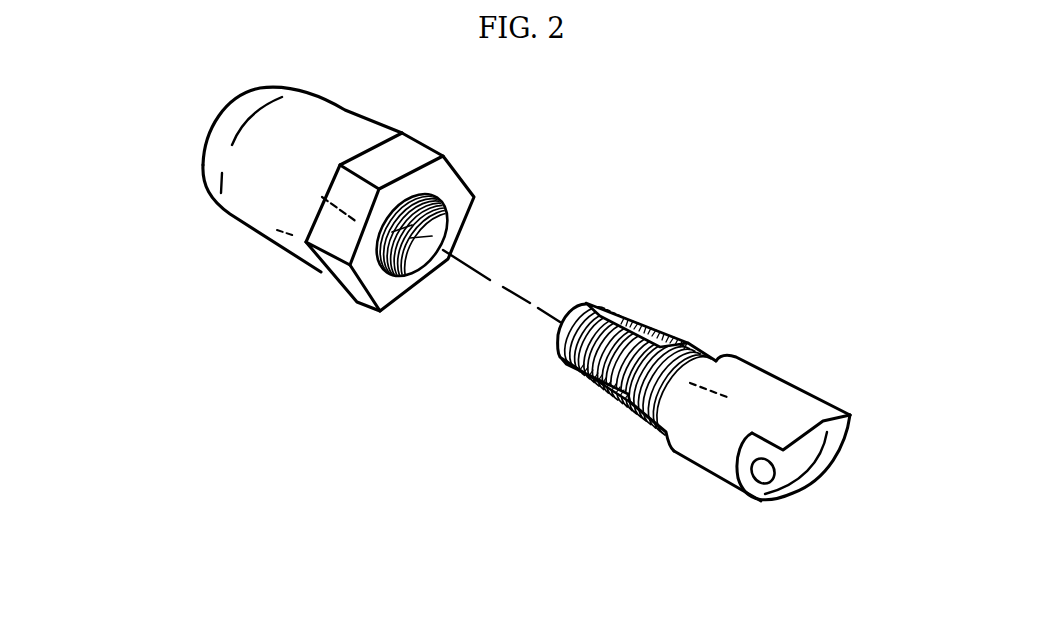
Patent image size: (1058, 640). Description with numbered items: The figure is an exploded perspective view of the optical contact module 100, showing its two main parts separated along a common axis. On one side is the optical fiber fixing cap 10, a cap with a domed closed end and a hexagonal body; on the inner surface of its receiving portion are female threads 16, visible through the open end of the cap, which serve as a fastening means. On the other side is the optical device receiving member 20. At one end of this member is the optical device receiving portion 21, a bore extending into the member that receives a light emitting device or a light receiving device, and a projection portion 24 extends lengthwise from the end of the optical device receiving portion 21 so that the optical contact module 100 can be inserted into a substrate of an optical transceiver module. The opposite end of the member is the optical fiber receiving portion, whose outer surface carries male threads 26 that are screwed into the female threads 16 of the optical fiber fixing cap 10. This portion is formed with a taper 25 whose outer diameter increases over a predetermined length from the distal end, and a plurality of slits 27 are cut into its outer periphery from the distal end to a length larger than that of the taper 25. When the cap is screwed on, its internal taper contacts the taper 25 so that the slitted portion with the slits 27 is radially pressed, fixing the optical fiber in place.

The optical contact module 100 is at (717, 138).
The optical fiber fixing cap 10 is at (317, 199).
The female threads 16 is at (455, 176).
The optical device receiving member 20 is at (699, 396).
The optical device receiving portion 21 is at (764, 484).
The projection portion 24 is at (840, 421).
The taper 25 is at (583, 308).
The male threads 26 is at (688, 337).
The slits 27 is at (560, 358).